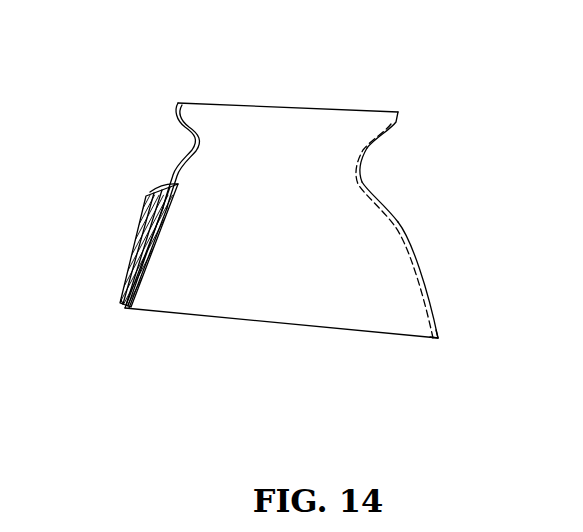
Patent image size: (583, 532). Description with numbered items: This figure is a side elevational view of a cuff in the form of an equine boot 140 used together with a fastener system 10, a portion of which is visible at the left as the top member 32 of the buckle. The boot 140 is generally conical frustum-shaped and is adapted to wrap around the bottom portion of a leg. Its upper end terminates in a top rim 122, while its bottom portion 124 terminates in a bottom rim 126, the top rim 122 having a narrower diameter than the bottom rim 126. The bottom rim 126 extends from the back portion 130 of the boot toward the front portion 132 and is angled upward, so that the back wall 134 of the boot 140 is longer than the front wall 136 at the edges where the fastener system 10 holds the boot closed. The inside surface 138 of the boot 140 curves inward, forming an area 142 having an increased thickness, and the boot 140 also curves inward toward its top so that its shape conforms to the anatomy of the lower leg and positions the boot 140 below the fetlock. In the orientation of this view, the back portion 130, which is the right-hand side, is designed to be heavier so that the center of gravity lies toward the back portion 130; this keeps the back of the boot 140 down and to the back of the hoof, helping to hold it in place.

The fastener system 10 is at (119, 240).
The top member 32 is at (131, 225).
The top rim 122 is at (228, 104).
The bottom portion 124 is at (118, 308).
The bottom rim 126 is at (210, 316).
The back portion 130 is at (403, 214).
The front portion 132 is at (160, 174).
The back wall 134 is at (406, 240).
The front wall 136 is at (175, 157).
The inside surface 138 is at (368, 145).
The equine boot 140 is at (450, 333).
The area having an increased thickness 142 is at (378, 158).